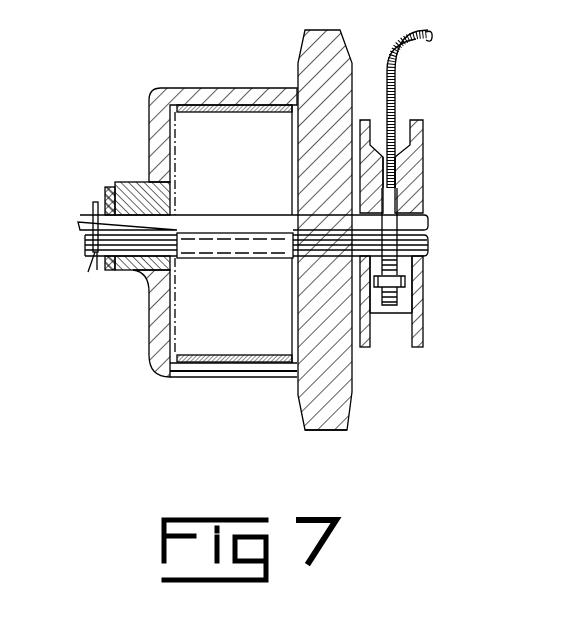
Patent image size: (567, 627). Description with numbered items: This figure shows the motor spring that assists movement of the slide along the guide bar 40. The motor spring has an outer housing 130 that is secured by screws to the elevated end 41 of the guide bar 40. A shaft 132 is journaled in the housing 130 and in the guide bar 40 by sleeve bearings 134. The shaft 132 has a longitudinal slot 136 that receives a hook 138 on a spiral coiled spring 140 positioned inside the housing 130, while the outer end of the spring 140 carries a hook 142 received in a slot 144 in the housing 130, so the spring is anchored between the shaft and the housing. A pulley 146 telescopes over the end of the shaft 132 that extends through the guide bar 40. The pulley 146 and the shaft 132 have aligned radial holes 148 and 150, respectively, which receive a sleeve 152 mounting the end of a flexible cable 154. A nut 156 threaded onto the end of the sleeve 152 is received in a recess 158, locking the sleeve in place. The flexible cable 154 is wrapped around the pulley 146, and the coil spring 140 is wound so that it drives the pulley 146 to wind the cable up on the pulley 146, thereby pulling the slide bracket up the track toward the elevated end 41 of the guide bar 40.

The guide bar 40 is at (294, 427).
The elevated end of guide bar 41 is at (332, 29).
The outer housing 130 is at (272, 87).
The shaft 132 is at (428, 212).
The sleeve bearings 134 is at (138, 279).
The longitudinal slot 136 is at (80, 250).
The hook 138 is at (194, 260).
The spiral coiled spring 140 is at (178, 157).
The hook 142 is at (272, 379).
The slot 144 is at (180, 378).
The pulley 146 is at (424, 146).
The radial hole 148 is at (397, 142).
The radial hole 150 is at (397, 224).
The sleeve 152 is at (401, 240).
The flexible cable 154 is at (421, 32).
The nut 156 is at (407, 281).
The recess 158 is at (403, 314).